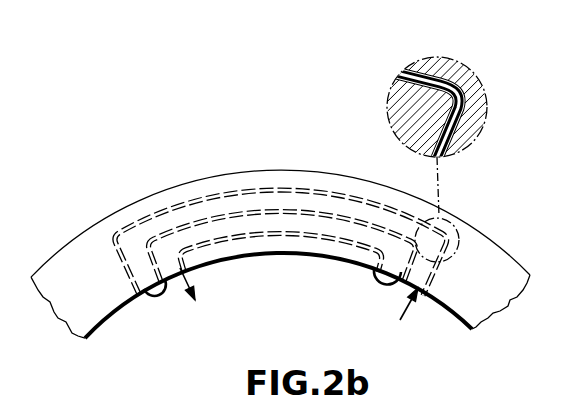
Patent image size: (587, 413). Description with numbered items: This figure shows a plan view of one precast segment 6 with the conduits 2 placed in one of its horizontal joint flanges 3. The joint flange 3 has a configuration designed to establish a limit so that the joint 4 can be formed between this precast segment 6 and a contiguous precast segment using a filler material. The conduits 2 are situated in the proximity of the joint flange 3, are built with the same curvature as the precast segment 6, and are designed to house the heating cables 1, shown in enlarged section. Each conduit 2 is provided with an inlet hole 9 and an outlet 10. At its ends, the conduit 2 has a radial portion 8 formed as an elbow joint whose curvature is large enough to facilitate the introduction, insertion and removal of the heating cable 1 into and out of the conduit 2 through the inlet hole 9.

The heating cable 1 is at (305, 192).
The conduit 2 is at (438, 80).
The joint flange 3 is at (485, 265).
The joint 4 is at (123, 270).
The precast segment 6 is at (477, 77).
The radial portion 8 is at (121, 272).
The inlet hole 9 is at (403, 320).
The outlet 10 is at (193, 283).